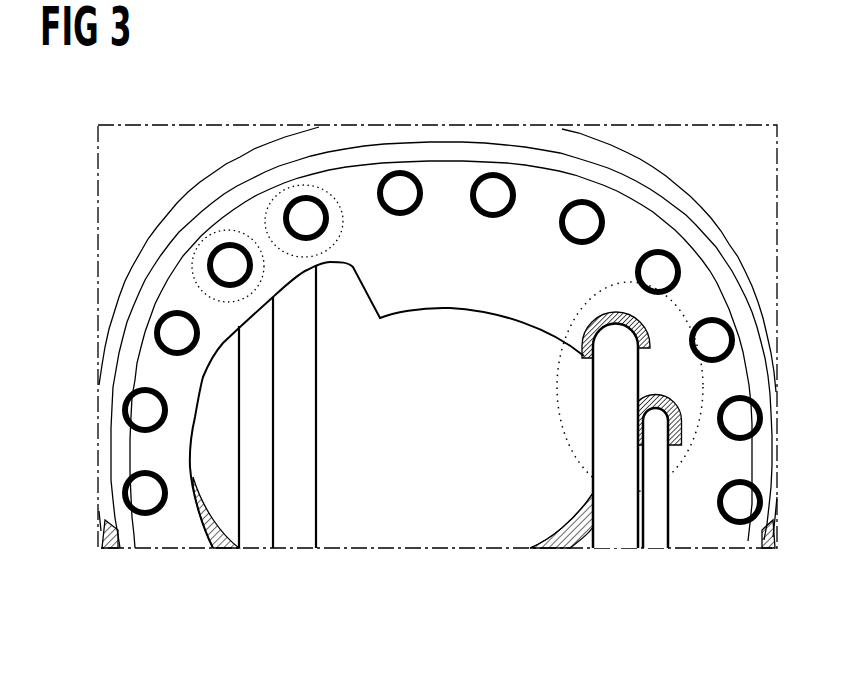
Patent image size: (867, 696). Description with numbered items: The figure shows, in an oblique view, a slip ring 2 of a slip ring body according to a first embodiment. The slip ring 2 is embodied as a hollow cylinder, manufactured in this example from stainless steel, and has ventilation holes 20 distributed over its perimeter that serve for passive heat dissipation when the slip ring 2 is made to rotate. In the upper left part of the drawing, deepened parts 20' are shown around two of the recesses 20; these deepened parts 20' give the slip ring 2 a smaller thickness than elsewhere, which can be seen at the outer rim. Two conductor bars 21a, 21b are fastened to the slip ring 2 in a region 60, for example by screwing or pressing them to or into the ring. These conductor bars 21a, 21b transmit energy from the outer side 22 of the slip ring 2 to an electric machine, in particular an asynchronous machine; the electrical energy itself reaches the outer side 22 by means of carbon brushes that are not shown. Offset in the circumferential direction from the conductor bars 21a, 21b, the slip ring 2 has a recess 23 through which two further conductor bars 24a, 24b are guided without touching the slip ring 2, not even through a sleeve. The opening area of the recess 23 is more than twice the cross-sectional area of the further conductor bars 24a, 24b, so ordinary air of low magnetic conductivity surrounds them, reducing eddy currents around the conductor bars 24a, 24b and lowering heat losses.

The slip ring 2 is at (272, 162).
The ventilation holes 20 is at (442, 297).
The deepened parts 20' is at (236, 224).
The outer side 22 is at (523, 150).
The recess 23 is at (262, 403).
The further conductor bar 24a is at (228, 510).
The further conductor bar 24b is at (298, 527).
The conductor bar 21a is at (608, 533).
The conductor bar 21b is at (655, 537).
The region 60 is at (540, 415).